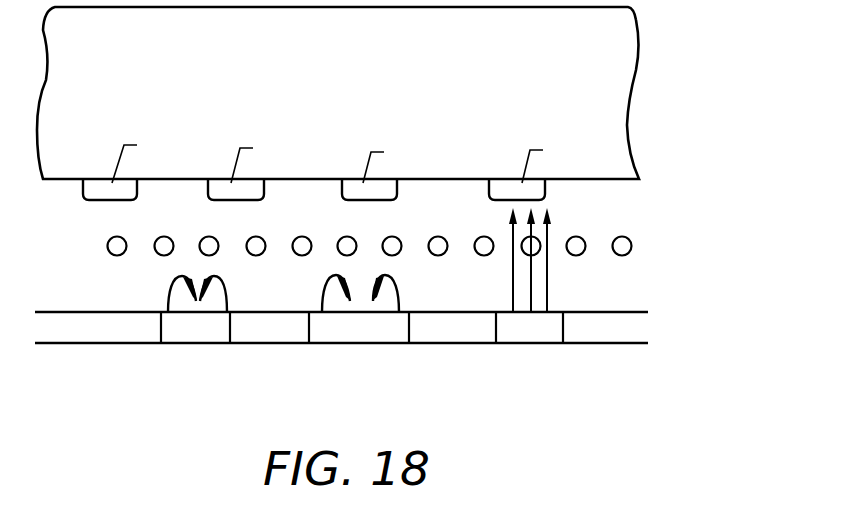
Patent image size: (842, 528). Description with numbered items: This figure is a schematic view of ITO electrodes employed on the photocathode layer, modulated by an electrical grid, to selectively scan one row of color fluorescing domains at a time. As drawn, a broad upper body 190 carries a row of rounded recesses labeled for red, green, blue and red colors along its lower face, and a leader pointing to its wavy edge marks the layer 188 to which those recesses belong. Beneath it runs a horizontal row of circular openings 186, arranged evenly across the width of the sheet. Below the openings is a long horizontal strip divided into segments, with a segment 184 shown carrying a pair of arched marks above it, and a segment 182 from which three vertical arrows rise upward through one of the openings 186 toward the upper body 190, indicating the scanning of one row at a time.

The substrate 190 is at (617, 63).
The pixel layer 188 is at (648, 156).
The apertures 186 is at (643, 239).
The emitter block 184 is at (345, 331).
The emitter block 182 is at (543, 331).